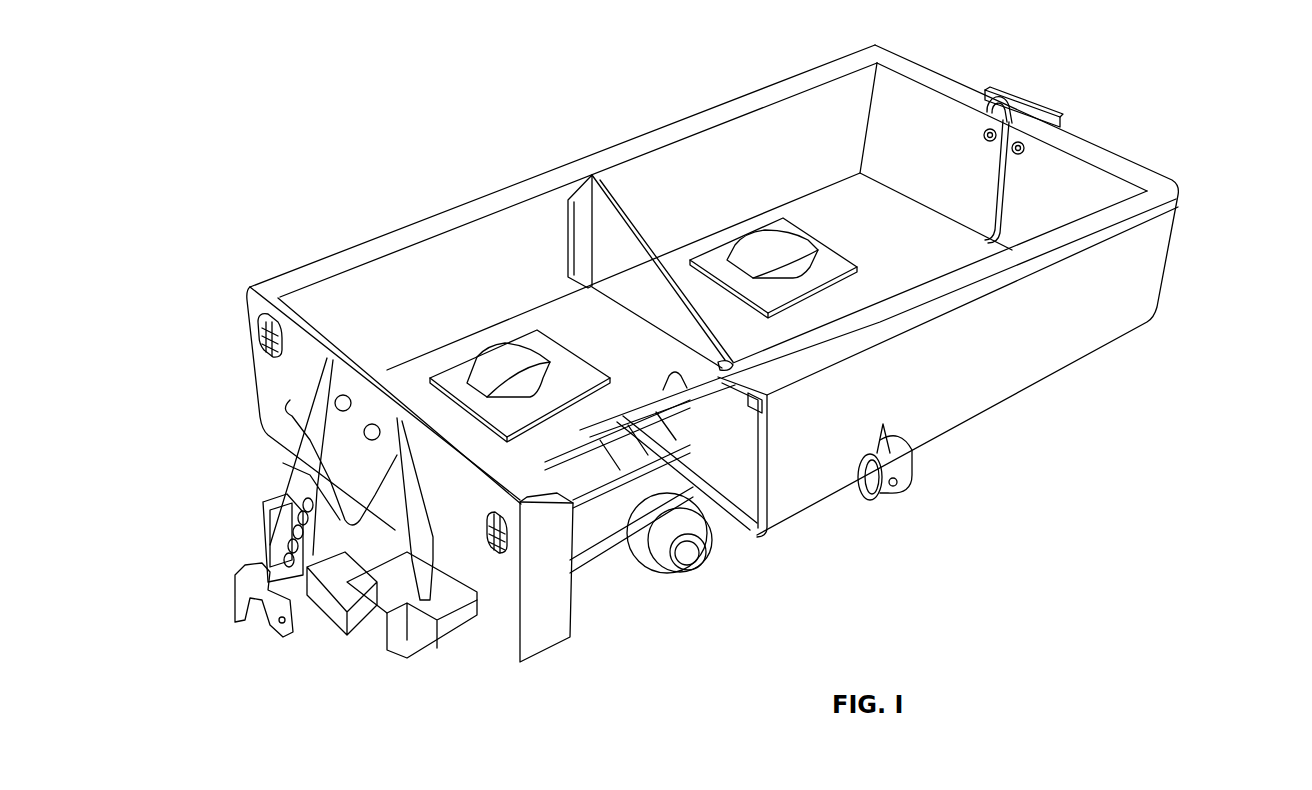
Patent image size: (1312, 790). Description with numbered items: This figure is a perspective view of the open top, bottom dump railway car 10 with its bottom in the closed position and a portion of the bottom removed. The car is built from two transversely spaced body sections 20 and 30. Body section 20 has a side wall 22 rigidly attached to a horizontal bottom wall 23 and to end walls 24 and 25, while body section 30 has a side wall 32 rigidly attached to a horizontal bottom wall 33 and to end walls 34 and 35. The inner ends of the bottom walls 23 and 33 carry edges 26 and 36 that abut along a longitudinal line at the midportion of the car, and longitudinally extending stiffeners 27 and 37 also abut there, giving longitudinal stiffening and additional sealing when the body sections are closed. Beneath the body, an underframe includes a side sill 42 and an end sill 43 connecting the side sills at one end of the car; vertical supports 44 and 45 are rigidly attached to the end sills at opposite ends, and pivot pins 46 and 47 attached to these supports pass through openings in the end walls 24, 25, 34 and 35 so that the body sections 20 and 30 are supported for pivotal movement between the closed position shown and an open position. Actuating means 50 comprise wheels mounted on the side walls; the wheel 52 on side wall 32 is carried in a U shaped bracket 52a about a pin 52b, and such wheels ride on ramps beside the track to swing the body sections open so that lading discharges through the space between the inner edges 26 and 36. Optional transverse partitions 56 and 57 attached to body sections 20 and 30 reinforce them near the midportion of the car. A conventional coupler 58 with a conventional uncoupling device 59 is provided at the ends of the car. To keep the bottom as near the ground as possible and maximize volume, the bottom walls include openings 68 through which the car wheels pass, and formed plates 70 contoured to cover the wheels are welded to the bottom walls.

The open top, bottom dump railway car 10 is at (1022, 73).
The body section 20 is at (628, 130).
The side wall 22 is at (760, 167).
The bottom wall 23 is at (851, 224).
The end wall 24 is at (305, 389).
The end wall 25 is at (933, 171).
The edge 26 is at (658, 388).
The stiffener 27 is at (550, 462).
The body section 30 is at (764, 353).
The side wall 32 is at (981, 362).
The bottom wall 33 is at (931, 307).
The end wall 34 is at (466, 512).
The end wall 35 is at (1065, 207).
The edge 36 is at (650, 410).
The stiffener 37 is at (630, 438).
The side sill 42 is at (440, 630).
The end sill 43 is at (380, 583).
The vertical support 44 is at (366, 466).
The vertical support 45 is at (1063, 126).
The pivot pin 46 is at (371, 424).
The pivot pin 47 is at (1012, 154).
The actuating means 50 is at (923, 487).
The wheel 52 is at (937, 493).
The U shaped bracket 52a is at (903, 465).
The pin 52b is at (898, 482).
The transverse partition 56 is at (628, 284).
The transverse partition 57 is at (750, 373).
The coupler 58 is at (275, 633).
The uncoupling device 59 is at (285, 464).
The opening 68 is at (843, 253).
The formed plate 70 is at (785, 307).